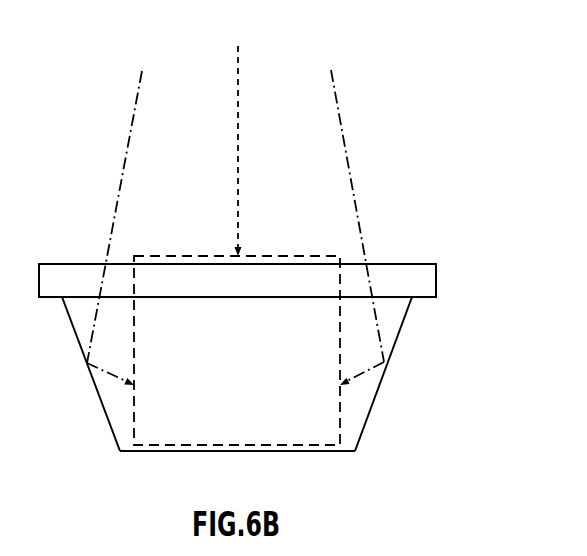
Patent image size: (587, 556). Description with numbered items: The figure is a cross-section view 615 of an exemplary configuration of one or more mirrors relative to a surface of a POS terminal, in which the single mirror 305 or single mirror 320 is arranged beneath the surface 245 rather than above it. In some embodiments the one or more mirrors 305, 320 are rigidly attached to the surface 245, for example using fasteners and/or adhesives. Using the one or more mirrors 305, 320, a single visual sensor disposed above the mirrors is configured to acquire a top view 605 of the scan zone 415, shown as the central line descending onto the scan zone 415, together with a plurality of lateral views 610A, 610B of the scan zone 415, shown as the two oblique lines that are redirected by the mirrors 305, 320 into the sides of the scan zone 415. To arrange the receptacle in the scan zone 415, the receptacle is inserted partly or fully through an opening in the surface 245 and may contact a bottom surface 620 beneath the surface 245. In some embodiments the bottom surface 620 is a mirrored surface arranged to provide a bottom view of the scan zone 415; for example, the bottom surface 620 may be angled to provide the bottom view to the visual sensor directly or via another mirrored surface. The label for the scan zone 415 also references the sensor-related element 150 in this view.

The cross-section view 615 is at (358, 32).
The top view 605 is at (238, 68).
The lateral view 610A is at (128, 154).
The lateral view 610B is at (343, 137).
The surface 245 is at (376, 259).
The scan zone 415 is at (239, 311).
The sensor 150 is at (275, 252).
The mirror 305 is at (219, 314).
The mirror 320 is at (80, 366).
The bottom surface 620 is at (332, 452).